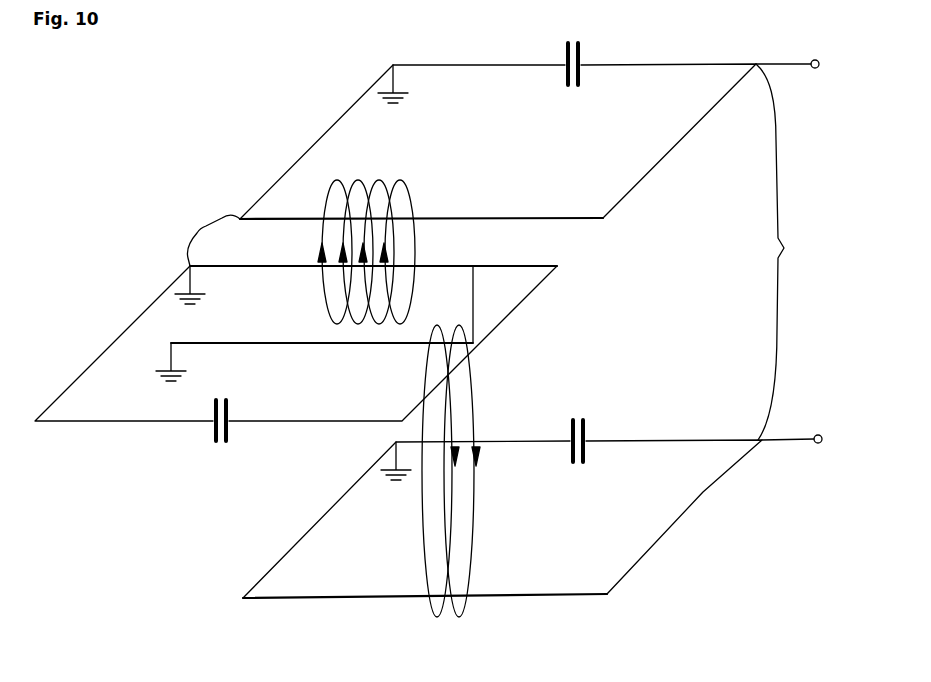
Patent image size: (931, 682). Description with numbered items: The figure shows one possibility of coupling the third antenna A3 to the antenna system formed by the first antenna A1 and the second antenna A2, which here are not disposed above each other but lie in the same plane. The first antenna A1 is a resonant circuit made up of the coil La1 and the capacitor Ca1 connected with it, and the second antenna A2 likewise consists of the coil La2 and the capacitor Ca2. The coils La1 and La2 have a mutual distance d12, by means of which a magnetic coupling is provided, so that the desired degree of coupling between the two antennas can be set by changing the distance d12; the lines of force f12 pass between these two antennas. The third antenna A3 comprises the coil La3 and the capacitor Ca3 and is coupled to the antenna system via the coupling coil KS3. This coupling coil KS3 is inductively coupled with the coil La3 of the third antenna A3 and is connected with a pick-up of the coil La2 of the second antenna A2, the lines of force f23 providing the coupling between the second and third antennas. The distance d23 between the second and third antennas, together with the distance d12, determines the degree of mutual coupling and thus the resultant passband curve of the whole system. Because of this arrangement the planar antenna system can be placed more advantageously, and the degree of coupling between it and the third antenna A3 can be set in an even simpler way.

The first antenna A1 is at (498, 141).
The second antenna A2 is at (296, 343).
The third antenna A3 is at (502, 519).
The coil of first antenna La1 is at (424, 203).
The coil of second antenna La2 is at (373, 304).
The coil of third antenna La3 is at (425, 610).
The capacitor of first antenna Ca1 is at (599, 53).
The capacitor of second antenna Ca2 is at (192, 429).
The capacitor of third antenna Ca3 is at (603, 430).
The coupling coil KS3 is at (314, 362).
The mutual distance between coils La1 and La2 d12 is at (200, 240).
The distance between second and third antennas d23 is at (792, 252).
The lines of force between first and second antennas f12 is at (351, 252).
The lines of force between second and third antennas f23 is at (460, 471).